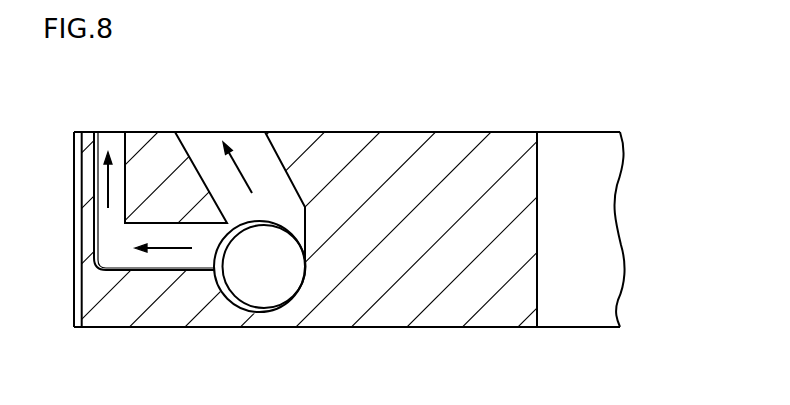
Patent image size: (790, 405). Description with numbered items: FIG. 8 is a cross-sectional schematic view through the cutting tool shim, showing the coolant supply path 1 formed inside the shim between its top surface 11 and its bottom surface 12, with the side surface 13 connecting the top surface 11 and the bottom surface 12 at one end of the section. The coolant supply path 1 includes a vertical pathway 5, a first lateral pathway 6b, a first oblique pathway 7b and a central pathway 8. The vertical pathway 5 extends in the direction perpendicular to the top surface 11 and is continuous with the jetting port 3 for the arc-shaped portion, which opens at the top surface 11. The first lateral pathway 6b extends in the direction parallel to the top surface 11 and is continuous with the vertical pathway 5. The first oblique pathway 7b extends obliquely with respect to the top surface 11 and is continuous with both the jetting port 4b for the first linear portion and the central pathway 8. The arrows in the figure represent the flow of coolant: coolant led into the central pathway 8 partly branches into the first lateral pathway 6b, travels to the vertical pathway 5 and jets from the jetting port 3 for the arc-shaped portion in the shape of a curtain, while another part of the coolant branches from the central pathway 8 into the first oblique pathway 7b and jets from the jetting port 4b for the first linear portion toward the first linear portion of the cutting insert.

The coolant supply path 1 is at (98, 91).
The jetting port for arc-shaped portion 3 is at (108, 132).
The vertical pathway 5 is at (113, 187).
The first lateral pathway 6b is at (167, 237).
The jetting port for first linear portion 4b is at (222, 132).
The first oblique pathway 7b is at (255, 167).
The central pathway 8 is at (272, 260).
The top surface 11 is at (448, 132).
The bottom surface 12 is at (448, 328).
The side surface 13 is at (577, 195).